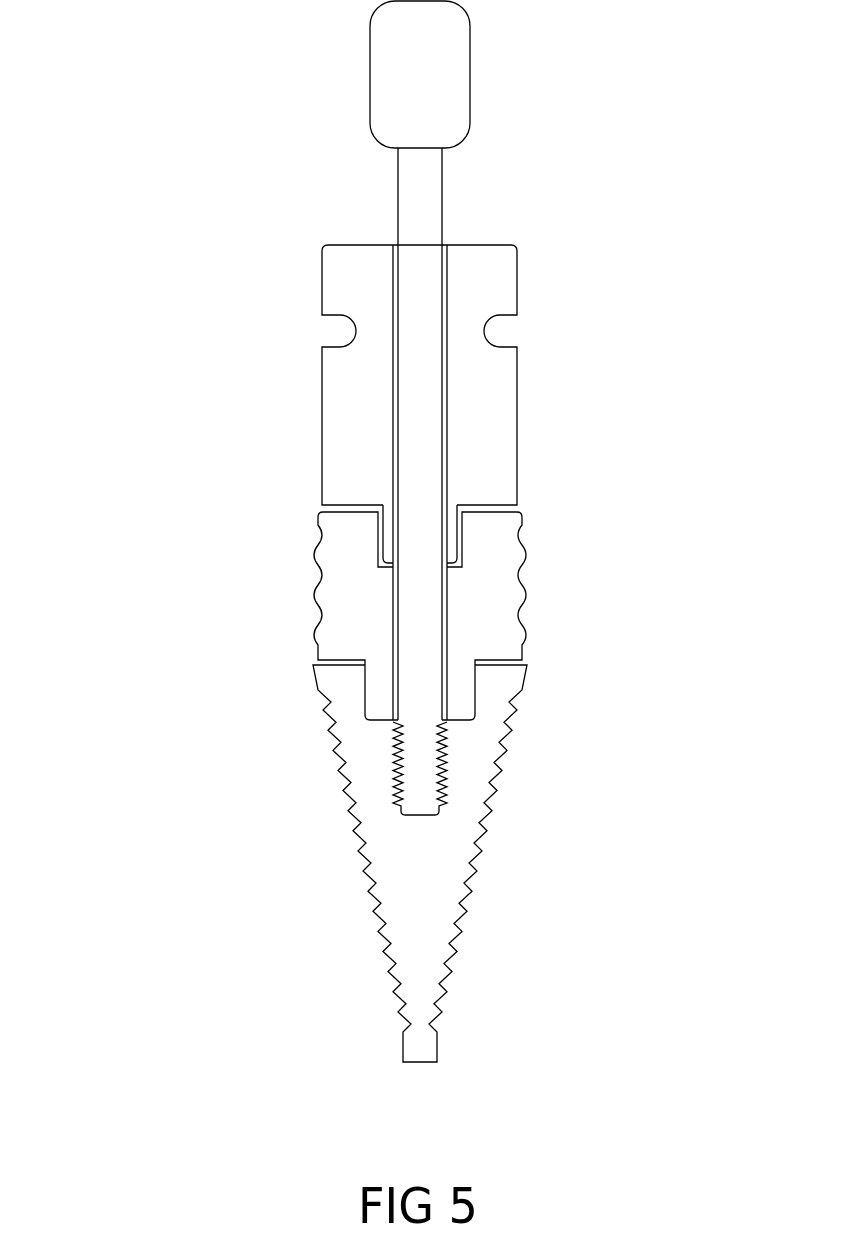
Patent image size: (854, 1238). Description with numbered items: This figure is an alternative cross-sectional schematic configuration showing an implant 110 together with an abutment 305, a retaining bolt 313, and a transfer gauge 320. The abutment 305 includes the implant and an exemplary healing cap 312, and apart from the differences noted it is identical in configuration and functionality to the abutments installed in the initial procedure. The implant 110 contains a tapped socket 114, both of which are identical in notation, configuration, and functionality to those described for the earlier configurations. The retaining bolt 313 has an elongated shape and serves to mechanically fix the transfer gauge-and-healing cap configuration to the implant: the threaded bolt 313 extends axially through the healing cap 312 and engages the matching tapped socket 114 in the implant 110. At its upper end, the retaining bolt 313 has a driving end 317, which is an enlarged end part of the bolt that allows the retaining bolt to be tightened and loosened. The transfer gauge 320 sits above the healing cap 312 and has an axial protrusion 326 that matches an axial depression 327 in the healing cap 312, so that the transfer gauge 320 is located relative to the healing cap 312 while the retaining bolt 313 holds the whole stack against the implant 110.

The abutment 305 is at (630, 452).
The driving end 317 is at (370, 85).
The retaining bolt 313 is at (393, 593).
The transfer gauge 320 is at (517, 405).
The axial protrusion 326 is at (388, 543).
The axial depression 327 is at (463, 548).
The healing cap 312 is at (522, 608).
The implant 110 is at (487, 823).
The tapped socket 114 is at (445, 780).